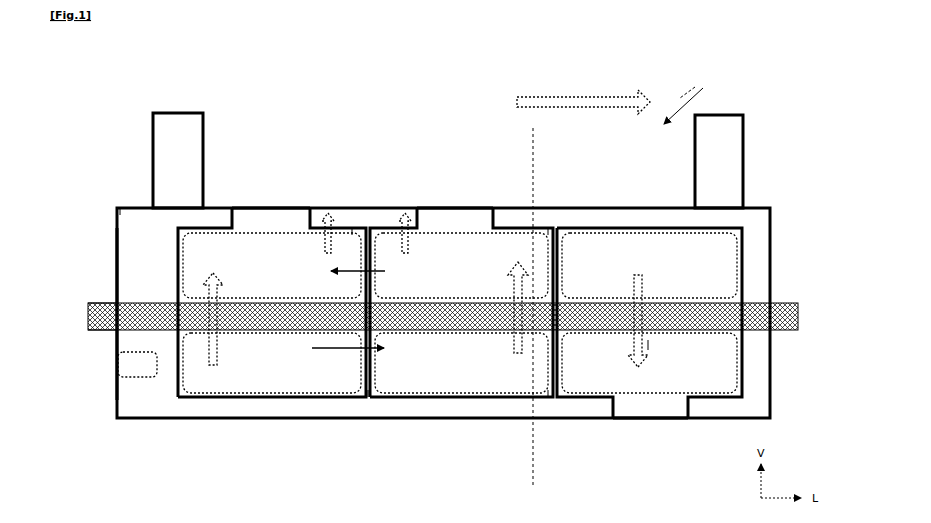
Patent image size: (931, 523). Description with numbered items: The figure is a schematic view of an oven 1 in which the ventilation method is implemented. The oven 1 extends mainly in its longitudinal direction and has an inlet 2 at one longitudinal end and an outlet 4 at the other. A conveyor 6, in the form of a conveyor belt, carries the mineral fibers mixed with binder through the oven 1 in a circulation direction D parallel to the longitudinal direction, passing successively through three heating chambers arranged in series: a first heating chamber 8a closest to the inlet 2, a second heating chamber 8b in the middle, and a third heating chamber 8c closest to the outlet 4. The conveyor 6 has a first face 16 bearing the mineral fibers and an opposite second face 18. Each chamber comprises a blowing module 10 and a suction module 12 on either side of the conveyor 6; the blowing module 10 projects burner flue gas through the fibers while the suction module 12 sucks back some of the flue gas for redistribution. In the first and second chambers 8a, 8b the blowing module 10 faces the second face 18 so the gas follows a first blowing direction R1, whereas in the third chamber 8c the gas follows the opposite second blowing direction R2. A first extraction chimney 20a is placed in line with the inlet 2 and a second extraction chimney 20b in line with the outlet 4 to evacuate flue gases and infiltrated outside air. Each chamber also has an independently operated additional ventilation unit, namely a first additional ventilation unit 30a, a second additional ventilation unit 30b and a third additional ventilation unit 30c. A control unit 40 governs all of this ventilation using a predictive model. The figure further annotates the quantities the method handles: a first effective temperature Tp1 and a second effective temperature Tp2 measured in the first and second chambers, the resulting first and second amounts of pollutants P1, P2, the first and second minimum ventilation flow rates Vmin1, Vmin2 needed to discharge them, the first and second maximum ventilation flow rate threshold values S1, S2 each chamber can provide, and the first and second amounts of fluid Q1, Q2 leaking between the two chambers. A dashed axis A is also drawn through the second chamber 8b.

The oven 1 is at (683, 98).
The inlet 2 is at (115, 334).
The outlet 4 is at (771, 331).
The conveyor 6 is at (148, 300).
The first heating chamber 8a is at (222, 398).
The second heating chamber 8b is at (408, 397).
The third heating chamber 8c is at (598, 422).
The blowing module 10 is at (612, 248).
The suction module 12 is at (220, 243).
The first face 16 is at (108, 303).
The second face 18 is at (97, 333).
The first extraction chimney 20a is at (152, 125).
The second extraction chimney 20b is at (745, 163).
The first additional ventilation unit 30a is at (263, 217).
The second additional ventilation unit 30b is at (450, 223).
The third additional ventilation unit 30c is at (650, 400).
The control unit 40 is at (133, 368).
The circulation direction D is at (590, 97).
The axis A is at (532, 143).
The first minimum ventilation flow rate Vmin1 is at (329, 205).
The second minimum ventilation flow rate Vmin2 is at (405, 205).
The first amount of fluid Q1 is at (353, 268).
The second amount of fluid Q2 is at (322, 352).
The first effective temperature Tp1 is at (182, 233).
The second effective temperature Tp2 is at (547, 397).
The first amount of pollutants P1 is at (352, 225).
The second amount of pollutants P2 is at (548, 227).
The first maximum ventilation flow rate threshold value S1 is at (178, 255).
The second maximum ventilation flow rate threshold value S2 is at (375, 396).
The first blowing direction R1 is at (178, 355).
The second blowing direction R2 is at (648, 345).